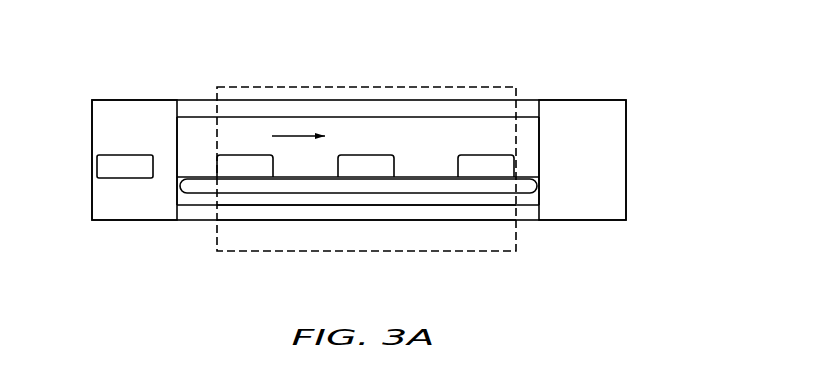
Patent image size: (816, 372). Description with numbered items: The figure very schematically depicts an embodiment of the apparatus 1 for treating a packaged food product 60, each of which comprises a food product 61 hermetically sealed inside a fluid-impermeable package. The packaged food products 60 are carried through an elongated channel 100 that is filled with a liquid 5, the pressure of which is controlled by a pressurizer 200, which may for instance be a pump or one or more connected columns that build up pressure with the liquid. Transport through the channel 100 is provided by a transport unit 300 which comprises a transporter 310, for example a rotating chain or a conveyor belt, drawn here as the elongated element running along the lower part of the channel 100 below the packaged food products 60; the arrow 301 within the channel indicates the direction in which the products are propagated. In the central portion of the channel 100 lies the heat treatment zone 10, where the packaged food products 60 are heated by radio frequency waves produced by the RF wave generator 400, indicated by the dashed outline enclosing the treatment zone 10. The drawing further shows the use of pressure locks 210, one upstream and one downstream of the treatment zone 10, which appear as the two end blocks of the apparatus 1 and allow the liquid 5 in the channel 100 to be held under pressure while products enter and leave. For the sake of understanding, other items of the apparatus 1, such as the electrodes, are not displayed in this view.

The apparatus 1 is at (648, 102).
The liquid 5 is at (122, 135).
The heat treatment zone 10 is at (402, 140).
The packaged food product 60 is at (137, 150).
The food product 61 is at (178, 137).
The channel 100 is at (228, 228).
The pressurizer 200 is at (172, 228).
The pressure lock 210 is at (113, 228).
The transport unit 300 is at (278, 228).
The flow direction 301 is at (300, 138).
The transporter 310 is at (390, 198).
The radio frequency wave generator 400 is at (468, 75).